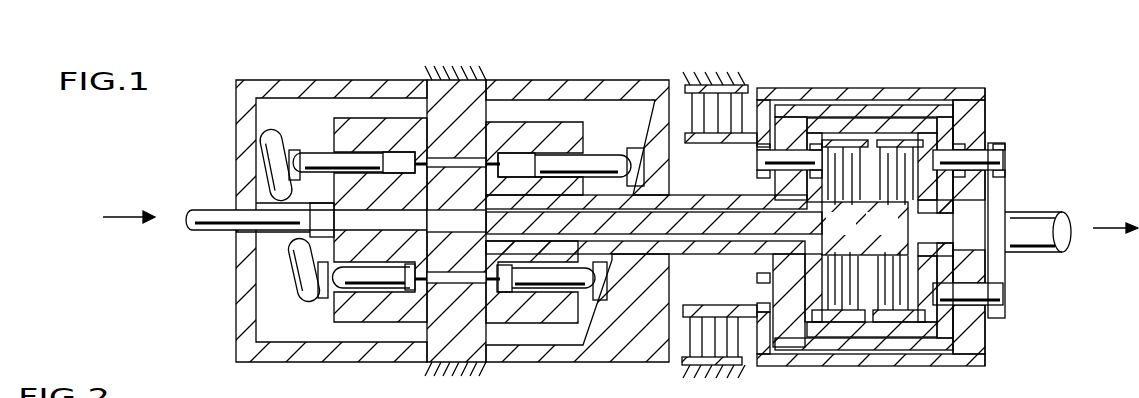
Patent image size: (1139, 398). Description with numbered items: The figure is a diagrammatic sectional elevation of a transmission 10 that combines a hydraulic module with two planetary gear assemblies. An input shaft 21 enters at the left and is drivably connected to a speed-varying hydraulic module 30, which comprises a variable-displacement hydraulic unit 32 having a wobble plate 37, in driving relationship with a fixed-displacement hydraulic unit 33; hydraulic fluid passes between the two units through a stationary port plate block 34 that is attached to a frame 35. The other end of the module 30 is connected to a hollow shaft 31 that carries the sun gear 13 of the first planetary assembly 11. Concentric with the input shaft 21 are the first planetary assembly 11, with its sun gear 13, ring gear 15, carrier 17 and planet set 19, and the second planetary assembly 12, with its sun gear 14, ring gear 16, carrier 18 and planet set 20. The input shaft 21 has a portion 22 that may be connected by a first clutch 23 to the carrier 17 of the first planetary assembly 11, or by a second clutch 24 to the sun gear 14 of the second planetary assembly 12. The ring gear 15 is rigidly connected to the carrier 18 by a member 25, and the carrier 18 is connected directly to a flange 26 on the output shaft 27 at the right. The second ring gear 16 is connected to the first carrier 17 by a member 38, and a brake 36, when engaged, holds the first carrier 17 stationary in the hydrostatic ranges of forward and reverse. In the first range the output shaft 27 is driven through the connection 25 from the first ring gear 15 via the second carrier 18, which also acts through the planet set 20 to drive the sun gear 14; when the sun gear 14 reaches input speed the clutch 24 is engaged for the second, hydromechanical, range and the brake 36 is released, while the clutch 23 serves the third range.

The transmission 10 is at (774, 63).
The first planetary assembly 11 is at (797, 103).
The second planetary assembly 12 is at (1000, 91).
The sun gear 13 is at (774, 198).
The sun gear 14 is at (977, 188).
The ring gear 15 is at (797, 140).
The ring gear 16 is at (975, 127).
The carrier 17 is at (757, 160).
The carrier 18 is at (985, 160).
The planet set 19 is at (830, 120).
The planet set 20 is at (977, 146).
The input shaft 21 is at (200, 207).
The portion 22 is at (908, 228).
The first clutch 23 is at (853, 190).
The second clutch 24 is at (898, 190).
The member 25 is at (910, 112).
The flange 26 is at (997, 266).
The output shaft 27 is at (1047, 217).
The speed-varying hydraulic module 30 is at (399, 112).
The hollow shaft 31 is at (700, 202).
The variable-displacement hydraulic unit 32 is at (344, 132).
The fixed-displacement hydraulic unit 33 is at (573, 137).
The stationary port plate block 34 is at (473, 110).
The frame 35 is at (464, 66).
The brake 36 is at (718, 85).
The wobble plate 37 is at (268, 142).
The member 38 is at (893, 90).